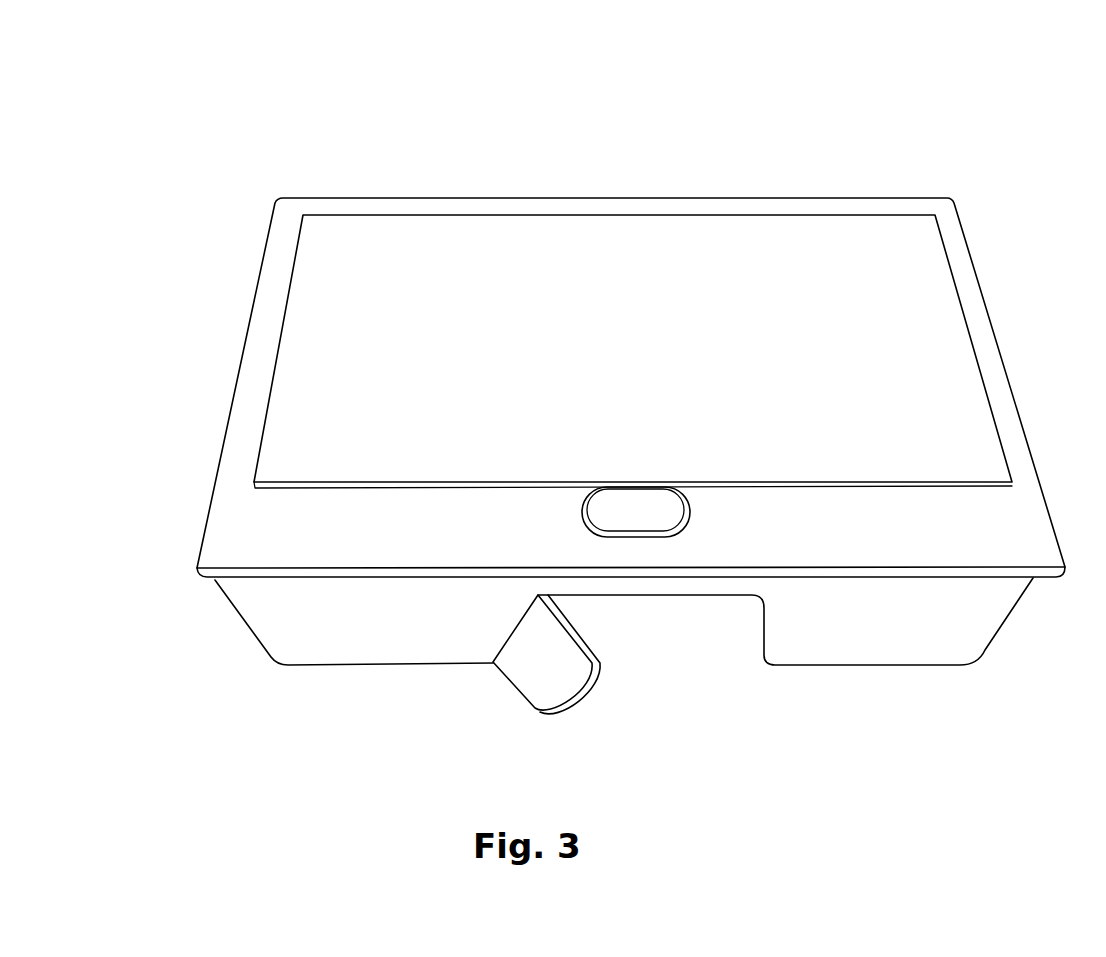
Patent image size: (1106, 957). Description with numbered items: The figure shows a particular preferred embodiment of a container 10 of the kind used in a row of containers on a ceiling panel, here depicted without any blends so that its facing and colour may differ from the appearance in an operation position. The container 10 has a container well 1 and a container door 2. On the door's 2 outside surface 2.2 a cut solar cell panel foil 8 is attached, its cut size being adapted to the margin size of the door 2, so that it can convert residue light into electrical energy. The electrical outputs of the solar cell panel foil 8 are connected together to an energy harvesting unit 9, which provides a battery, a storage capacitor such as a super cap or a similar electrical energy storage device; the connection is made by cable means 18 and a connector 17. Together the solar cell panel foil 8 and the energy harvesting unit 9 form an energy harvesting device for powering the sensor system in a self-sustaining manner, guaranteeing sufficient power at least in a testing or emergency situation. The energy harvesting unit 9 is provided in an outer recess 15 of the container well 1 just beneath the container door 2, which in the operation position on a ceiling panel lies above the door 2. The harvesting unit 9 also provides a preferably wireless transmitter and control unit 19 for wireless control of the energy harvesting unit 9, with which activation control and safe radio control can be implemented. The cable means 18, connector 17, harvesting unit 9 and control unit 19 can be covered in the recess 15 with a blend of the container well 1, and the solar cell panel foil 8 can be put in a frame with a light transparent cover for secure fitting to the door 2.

The container 10 is at (962, 160).
The cut solar cell panel foil 8 is at (953, 378).
The container door 2 is at (1018, 512).
The outside surface 2.2 is at (981, 551).
The container well 1 is at (982, 628).
The outer recess 15 is at (756, 629).
The wireless transmitter and control unit 19 is at (672, 585).
The energy harvesting unit 9 is at (693, 587).
The connector 17 is at (503, 608).
The cable means 18 is at (592, 660).